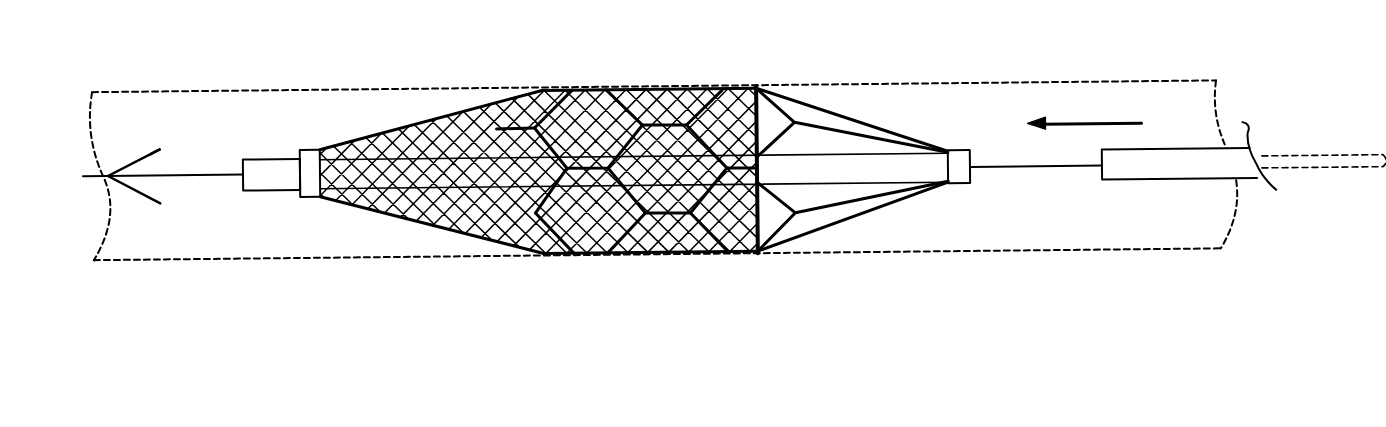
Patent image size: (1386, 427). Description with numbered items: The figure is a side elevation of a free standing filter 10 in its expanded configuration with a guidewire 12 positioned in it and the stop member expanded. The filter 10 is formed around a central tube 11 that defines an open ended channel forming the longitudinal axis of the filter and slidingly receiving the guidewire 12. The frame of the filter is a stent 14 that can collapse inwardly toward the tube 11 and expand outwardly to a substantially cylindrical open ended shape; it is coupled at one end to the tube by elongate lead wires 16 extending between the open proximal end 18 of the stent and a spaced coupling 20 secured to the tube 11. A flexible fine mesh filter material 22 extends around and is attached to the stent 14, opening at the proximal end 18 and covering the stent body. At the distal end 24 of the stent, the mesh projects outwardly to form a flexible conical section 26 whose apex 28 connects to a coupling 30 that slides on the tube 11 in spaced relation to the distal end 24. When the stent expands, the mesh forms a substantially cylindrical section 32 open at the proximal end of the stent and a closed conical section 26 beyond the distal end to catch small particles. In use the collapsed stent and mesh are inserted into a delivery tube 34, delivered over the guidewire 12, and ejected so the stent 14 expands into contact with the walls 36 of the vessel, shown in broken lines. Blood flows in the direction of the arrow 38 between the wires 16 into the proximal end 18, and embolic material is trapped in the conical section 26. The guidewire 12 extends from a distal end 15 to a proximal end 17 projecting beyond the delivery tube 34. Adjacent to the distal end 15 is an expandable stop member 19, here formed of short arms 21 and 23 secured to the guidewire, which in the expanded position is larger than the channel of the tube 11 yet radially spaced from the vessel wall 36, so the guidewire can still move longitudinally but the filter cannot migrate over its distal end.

The free standing filter 10 is at (722, 204).
The central tube 11 is at (903, 181).
The guidewire 12 is at (1038, 177).
The stent 14 is at (545, 175).
The distal end of the guidewire 15 is at (94, 171).
The lead wires 16 is at (868, 131).
The proximal end of the guidewire 17 is at (1310, 181).
The proximal end of the stent 18 is at (800, 125).
The stop member 19 is at (142, 150).
The coupling 20 is at (948, 159).
The short arm 21 is at (140, 197).
The fine mesh filter material 22 is at (463, 237).
The short arm 23 is at (161, 150).
The distal end of the stent 24 is at (537, 94).
The conical section 26 is at (428, 124).
The apex 28 is at (350, 206).
The coupling 30 is at (308, 150).
The cylindrical section 32 is at (677, 260).
The delivery tube 34 is at (1175, 191).
The walls of the vessel 36 is at (1048, 260).
The arrow 38 is at (1088, 131).